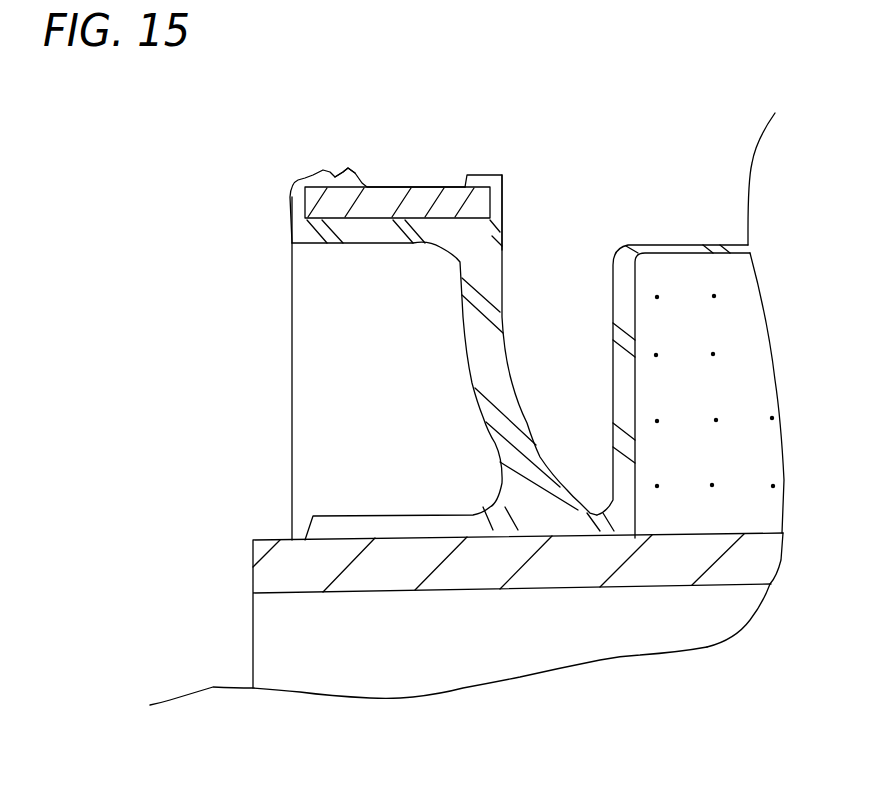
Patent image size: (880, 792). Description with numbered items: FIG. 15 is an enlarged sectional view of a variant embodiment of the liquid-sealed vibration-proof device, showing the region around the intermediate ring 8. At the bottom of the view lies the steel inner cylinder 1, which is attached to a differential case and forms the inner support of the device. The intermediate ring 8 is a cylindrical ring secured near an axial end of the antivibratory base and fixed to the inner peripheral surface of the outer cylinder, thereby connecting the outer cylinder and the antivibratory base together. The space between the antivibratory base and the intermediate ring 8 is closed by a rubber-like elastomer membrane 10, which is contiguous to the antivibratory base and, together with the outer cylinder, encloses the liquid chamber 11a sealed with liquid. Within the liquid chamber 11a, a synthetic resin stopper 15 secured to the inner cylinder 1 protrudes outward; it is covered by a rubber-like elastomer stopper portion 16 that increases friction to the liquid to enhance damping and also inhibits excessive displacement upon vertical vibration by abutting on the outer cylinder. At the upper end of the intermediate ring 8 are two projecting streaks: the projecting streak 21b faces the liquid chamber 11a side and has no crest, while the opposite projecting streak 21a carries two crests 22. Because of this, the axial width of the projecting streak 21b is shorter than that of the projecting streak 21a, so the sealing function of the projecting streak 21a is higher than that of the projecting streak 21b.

The inner cylinder 1 is at (662, 565).
The intermediate ring 8 is at (397, 185).
The rubber-like elastomer membrane 10 is at (485, 365).
The liquid chamber 11a is at (562, 265).
The stopper 15 is at (687, 273).
The rubber-like elastomer stopper portion 16 is at (640, 243).
The projecting streak 21a is at (303, 178).
The projecting streak 21b is at (482, 174).
The crest 22 is at (343, 170).